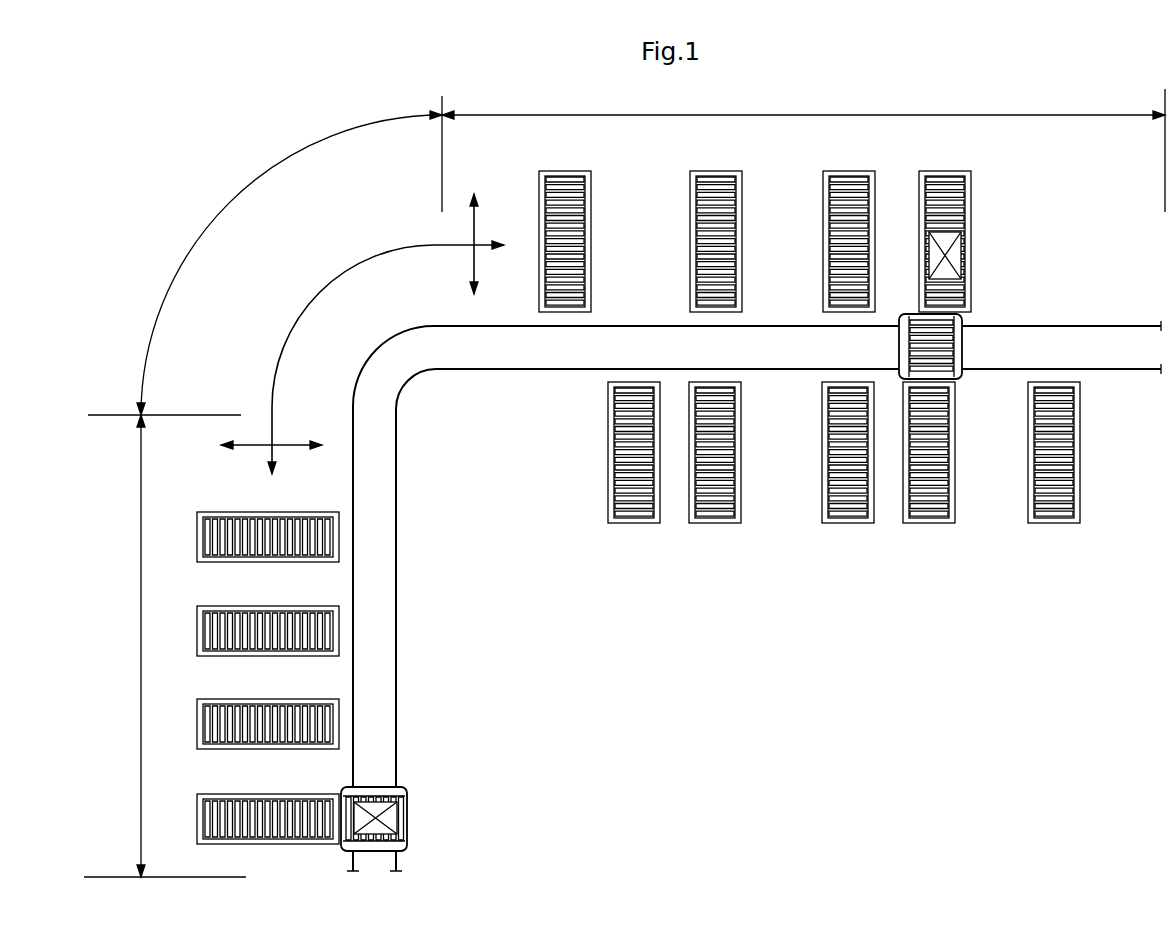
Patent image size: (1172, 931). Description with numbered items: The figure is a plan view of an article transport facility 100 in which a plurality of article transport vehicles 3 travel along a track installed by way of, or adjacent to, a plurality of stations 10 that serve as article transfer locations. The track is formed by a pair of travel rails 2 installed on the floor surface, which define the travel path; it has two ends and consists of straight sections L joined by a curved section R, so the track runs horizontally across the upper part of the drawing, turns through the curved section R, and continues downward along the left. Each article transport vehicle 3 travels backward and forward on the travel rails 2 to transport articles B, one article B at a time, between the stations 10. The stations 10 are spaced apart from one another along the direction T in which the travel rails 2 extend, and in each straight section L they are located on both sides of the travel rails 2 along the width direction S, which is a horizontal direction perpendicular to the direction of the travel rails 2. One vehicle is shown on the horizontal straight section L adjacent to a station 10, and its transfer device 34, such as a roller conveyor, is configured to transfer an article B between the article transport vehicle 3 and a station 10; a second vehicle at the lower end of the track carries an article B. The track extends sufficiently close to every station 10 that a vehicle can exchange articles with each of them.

The article transport facility 100 is at (962, 683).
The travel rails 2 is at (493, 322).
The article transport vehicle 3 is at (958, 315).
The transfer device 34 is at (943, 345).
The station 10 is at (587, 243).
The article B is at (950, 247).
The straight section L is at (624, 480).
The curved section R is at (289, 263).
The width direction S is at (349, 321).
The travel direction T is at (386, 357).